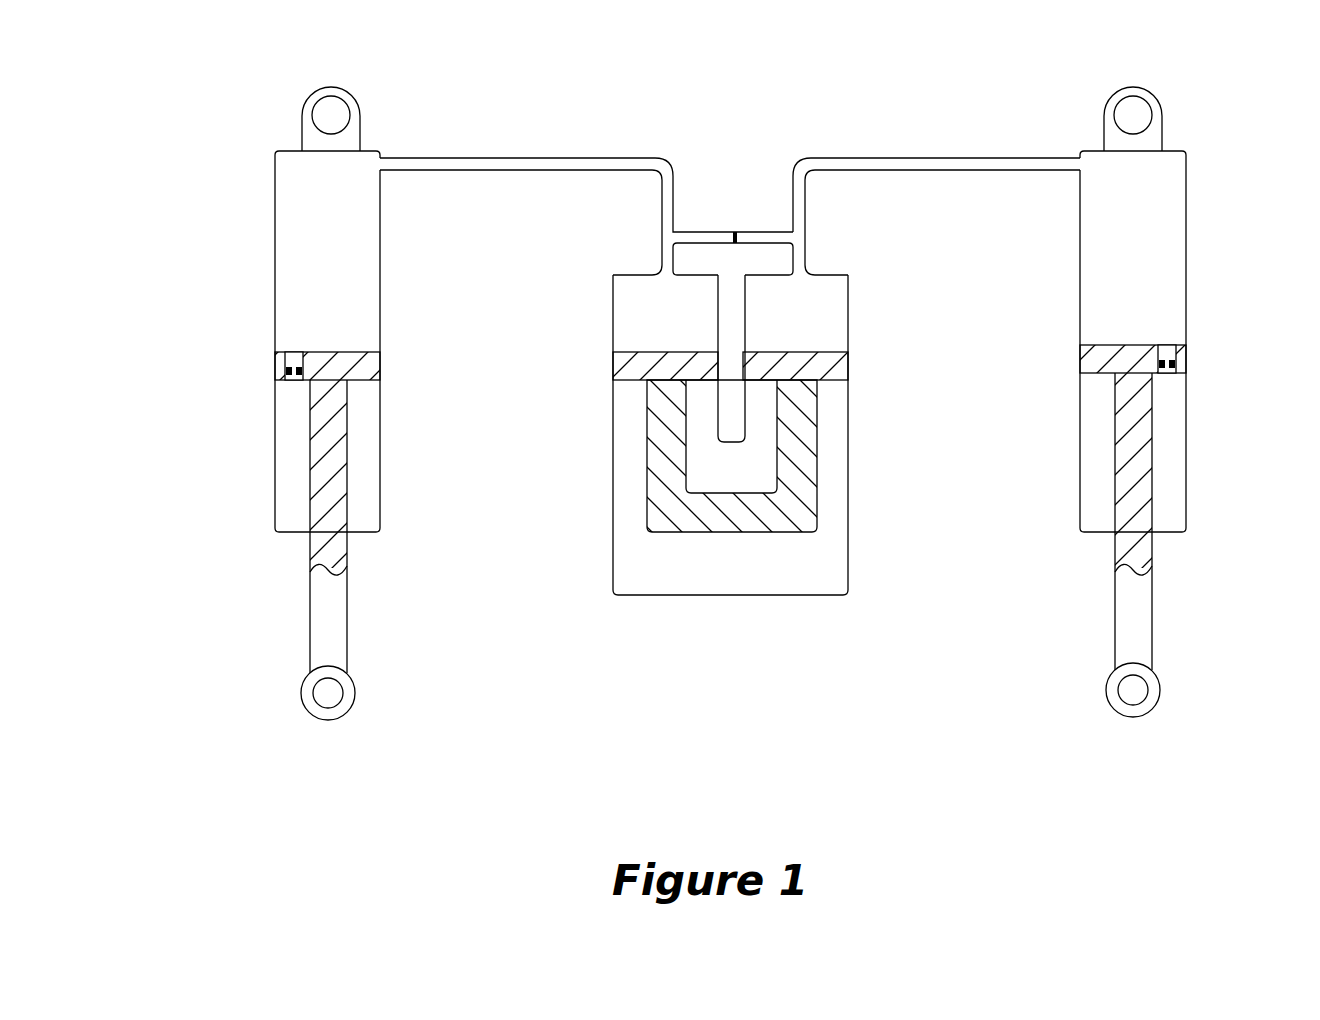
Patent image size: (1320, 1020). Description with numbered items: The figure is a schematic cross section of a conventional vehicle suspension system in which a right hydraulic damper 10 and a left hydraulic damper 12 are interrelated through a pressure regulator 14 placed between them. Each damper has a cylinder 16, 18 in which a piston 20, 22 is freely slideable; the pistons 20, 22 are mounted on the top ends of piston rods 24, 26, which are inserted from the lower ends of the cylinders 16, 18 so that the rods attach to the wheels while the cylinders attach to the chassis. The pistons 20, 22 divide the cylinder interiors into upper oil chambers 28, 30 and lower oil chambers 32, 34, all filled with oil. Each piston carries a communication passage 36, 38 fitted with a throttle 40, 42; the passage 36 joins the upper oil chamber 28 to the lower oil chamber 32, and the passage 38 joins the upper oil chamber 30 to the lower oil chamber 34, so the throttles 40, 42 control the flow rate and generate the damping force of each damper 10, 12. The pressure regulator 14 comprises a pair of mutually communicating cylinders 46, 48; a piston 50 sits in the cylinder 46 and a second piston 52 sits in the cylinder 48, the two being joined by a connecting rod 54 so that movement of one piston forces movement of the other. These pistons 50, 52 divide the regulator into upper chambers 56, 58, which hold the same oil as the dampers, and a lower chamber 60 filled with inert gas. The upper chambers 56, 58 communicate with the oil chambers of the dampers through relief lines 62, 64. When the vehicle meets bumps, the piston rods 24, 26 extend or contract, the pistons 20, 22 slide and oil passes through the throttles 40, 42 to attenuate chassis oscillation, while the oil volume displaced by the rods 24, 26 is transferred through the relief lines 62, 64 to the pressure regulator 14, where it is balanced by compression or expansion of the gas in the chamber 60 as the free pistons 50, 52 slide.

The right hydraulic damper 10 is at (1051, 270).
The left hydraulic damper 12 is at (424, 266).
The pressure regulator 14 is at (872, 431).
The cylinder 16 is at (1080, 318).
The cylinder 18 is at (380, 420).
The piston 20 is at (1105, 345).
The piston 22 is at (345, 352).
The piston rod 24 is at (1115, 628).
The piston rod 26 is at (348, 620).
The upper oil chamber 28 is at (1175, 235).
The upper oil chamber 30 is at (298, 248).
The lower oil chamber 32 is at (1095, 468).
The lower oil chamber 34 is at (372, 490).
The communication passage 36 is at (1177, 378).
The communication passage 38 is at (286, 385).
The throttle 40 is at (1165, 345).
The throttle 42 is at (290, 350).
The cylinder 46 is at (848, 318).
The cylinder 48 is at (613, 320).
The piston 50 is at (808, 365).
The second piston 52 is at (697, 360).
The connecting rod 54 is at (688, 520).
The upper chamber 56 is at (822, 276).
The upper chamber 58 is at (637, 298).
The lower chamber 60 is at (782, 578).
The relief line 62 is at (972, 158).
The relief line 64 is at (540, 158).